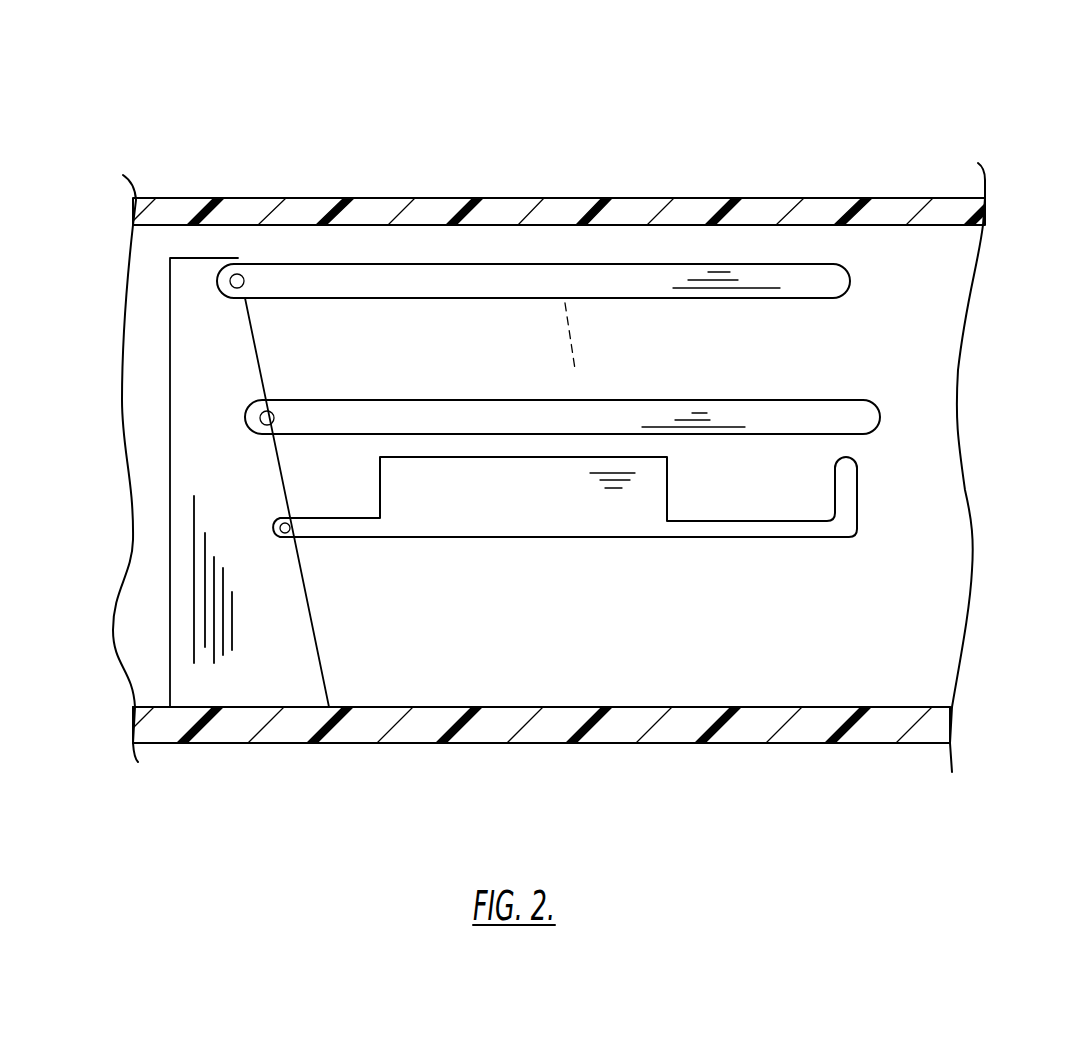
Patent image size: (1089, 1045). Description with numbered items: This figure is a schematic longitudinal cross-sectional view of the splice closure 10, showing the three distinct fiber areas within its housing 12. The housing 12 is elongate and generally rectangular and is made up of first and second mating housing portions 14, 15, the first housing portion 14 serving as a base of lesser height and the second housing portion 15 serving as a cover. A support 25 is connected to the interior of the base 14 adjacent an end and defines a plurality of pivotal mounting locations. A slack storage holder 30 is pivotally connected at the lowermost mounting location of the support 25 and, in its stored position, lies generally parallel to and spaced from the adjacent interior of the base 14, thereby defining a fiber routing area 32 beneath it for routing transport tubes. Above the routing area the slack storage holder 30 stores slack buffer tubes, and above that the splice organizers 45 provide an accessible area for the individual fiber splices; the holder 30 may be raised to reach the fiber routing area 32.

The splice closure 10 is at (847, 145).
The housing 12 is at (243, 748).
The first housing portion 14 is at (855, 730).
The second housing portion 15 is at (302, 210).
The support 25 is at (192, 457).
The slack storage holder 30 is at (888, 467).
The fiber routing area 32 is at (838, 622).
The splice organizers 45 is at (516, 420).